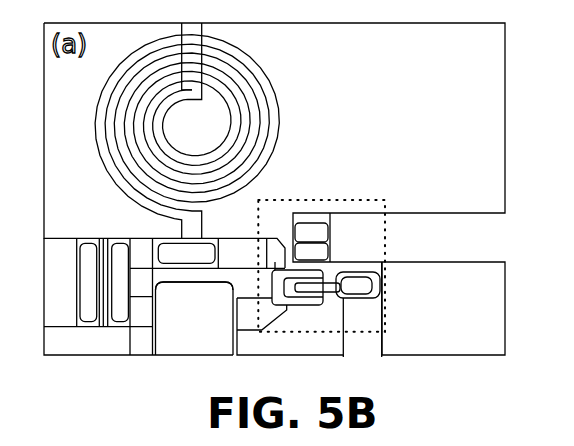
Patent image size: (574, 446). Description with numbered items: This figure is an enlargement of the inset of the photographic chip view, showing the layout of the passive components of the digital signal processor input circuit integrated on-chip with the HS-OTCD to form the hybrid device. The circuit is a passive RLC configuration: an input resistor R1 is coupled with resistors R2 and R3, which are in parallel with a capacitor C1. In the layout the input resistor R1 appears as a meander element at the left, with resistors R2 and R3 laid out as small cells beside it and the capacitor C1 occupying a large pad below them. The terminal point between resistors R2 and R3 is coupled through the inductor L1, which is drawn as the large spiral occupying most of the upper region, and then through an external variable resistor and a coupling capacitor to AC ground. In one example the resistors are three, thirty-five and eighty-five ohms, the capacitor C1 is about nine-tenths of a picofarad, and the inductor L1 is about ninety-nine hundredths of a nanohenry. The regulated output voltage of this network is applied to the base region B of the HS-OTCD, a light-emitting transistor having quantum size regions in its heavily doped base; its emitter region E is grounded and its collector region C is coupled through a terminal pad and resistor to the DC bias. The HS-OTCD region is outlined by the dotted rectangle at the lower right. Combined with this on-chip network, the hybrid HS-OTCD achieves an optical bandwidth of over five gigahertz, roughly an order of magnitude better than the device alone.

The inductor L1 is at (273, 119).
The input resistor R1 is at (103, 256).
The resistor R2 is at (142, 255).
The resistor R3 is at (238, 254).
The capacitor C1 is at (195, 312).
The high-speed optical transistor-coupled device HS-OTCD is at (352, 181).
The collector region C is at (327, 237).
The base region B is at (297, 276).
The emitter region E is at (337, 301).